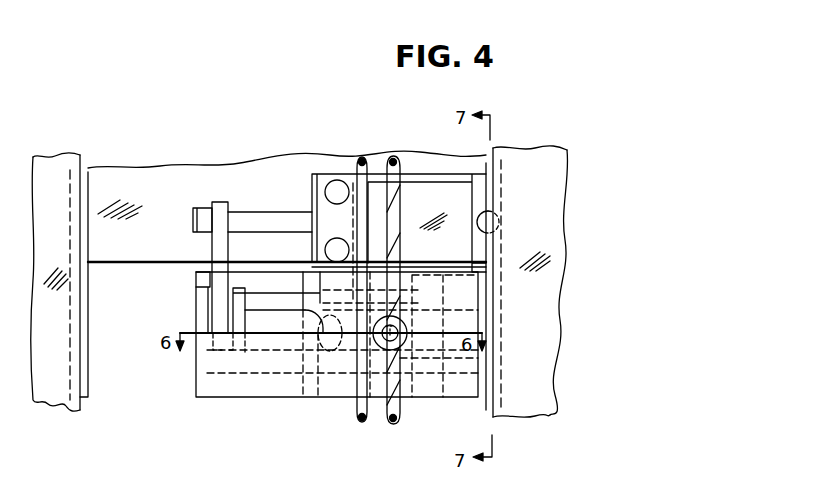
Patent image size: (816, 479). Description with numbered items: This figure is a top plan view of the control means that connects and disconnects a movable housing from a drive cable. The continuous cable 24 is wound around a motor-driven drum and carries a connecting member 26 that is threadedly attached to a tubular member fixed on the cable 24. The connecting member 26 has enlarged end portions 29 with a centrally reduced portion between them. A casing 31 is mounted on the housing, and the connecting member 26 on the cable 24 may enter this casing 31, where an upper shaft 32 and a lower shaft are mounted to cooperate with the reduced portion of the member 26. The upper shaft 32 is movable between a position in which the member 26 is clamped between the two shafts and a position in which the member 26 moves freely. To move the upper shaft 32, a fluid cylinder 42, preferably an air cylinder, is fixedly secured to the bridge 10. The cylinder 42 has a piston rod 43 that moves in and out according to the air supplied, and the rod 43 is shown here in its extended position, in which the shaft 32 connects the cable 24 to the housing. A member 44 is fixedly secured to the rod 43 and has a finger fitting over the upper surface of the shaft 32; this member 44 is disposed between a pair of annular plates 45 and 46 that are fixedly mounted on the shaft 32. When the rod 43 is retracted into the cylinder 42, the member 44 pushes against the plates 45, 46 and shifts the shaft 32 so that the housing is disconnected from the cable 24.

The bridge 10 is at (528, 417).
The continuous cable 24 is at (357, 415).
The connecting member 26 is at (333, 375).
The enlarged end portions 29 is at (345, 375).
The casing 31 is at (218, 399).
The upper shaft 32 is at (288, 310).
The fluid cylinder 42 is at (340, 173).
The piston rod 43 is at (272, 215).
The member 44 is at (217, 245).
The annular plate 45 is at (210, 285).
The annular plate 46 is at (245, 282).